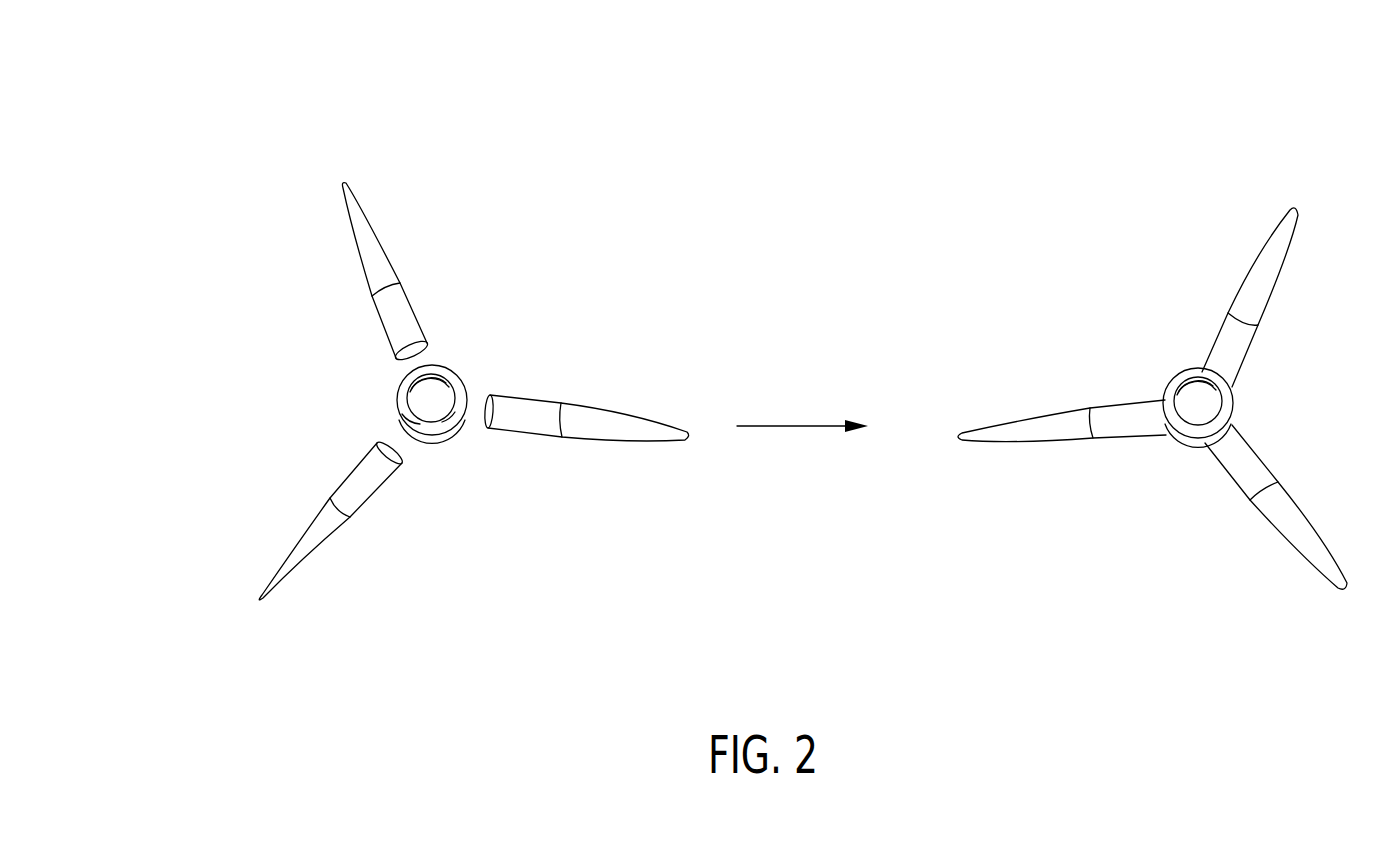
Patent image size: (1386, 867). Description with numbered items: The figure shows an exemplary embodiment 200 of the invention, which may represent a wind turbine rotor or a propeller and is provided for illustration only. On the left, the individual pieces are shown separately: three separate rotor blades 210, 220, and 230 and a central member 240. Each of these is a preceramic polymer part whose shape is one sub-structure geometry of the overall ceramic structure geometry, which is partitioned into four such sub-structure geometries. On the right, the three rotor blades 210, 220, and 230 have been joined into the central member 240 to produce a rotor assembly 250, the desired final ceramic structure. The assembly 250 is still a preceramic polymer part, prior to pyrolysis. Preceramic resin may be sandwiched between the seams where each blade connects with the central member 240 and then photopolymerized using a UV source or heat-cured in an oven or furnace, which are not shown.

The exemplary embodiment 200 is at (250, 124).
The rotor blade 210 is at (390, 258).
The rotor blade 220 is at (587, 403).
The rotor blade 230 is at (338, 533).
The central member 240 is at (453, 378).
The rotor assembly 250 is at (1045, 300).